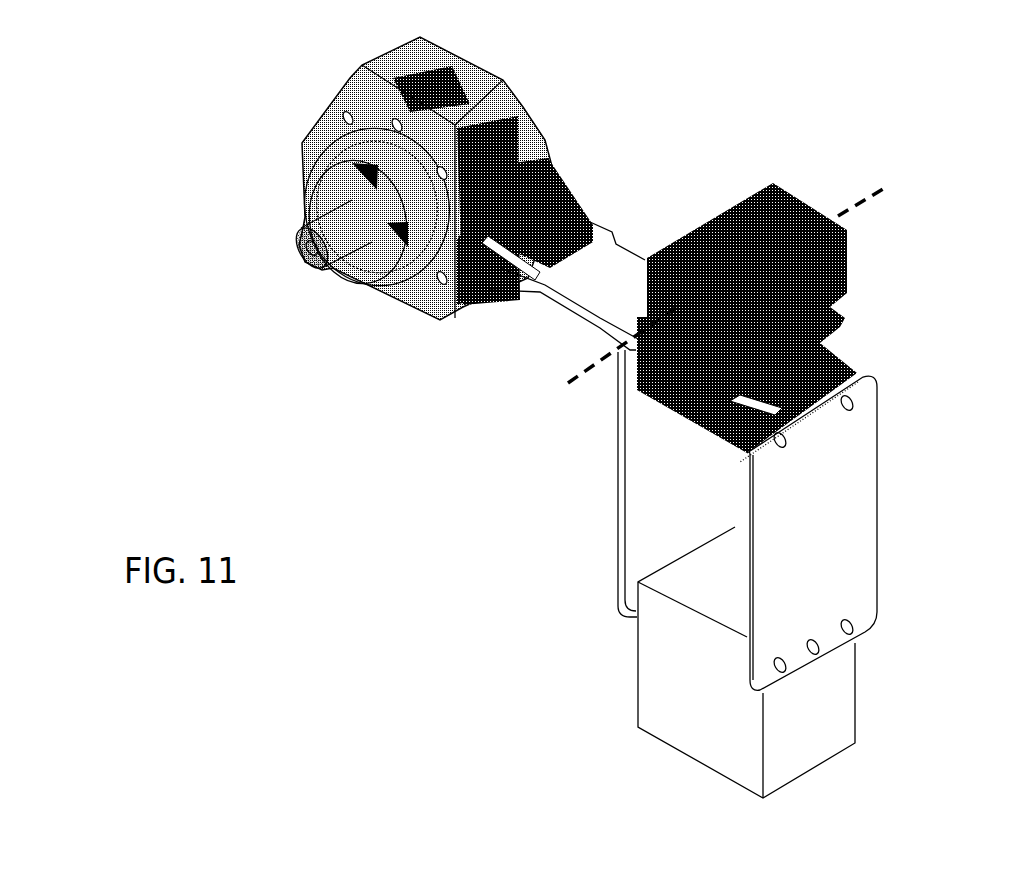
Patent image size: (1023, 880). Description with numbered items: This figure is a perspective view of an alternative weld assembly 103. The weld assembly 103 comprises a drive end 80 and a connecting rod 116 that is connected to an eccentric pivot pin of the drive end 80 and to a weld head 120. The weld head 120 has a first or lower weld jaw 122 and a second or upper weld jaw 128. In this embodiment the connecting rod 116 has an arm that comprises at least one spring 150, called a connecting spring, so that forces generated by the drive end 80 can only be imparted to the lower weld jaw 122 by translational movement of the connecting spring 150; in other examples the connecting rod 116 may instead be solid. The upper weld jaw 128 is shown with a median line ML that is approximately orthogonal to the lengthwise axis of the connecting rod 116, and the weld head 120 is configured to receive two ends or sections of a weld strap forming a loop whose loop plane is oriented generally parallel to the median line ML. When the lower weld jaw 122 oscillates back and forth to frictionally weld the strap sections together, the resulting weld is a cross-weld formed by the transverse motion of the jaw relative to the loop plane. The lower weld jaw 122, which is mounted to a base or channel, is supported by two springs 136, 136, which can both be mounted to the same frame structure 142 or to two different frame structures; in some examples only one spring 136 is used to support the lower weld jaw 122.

The drive end 80 is at (205, 92).
The weld assembly 103 is at (833, 143).
The connecting rod 116 is at (558, 210).
The weld head 120 is at (748, 185).
The upper weld jaw 128 is at (812, 280).
The lower weld jaw 122 is at (830, 328).
The spring 136 is at (641, 513).
The frame structure 142 is at (676, 716).
The connecting spring 150 is at (597, 295).
The median line ML is at (730, 296).